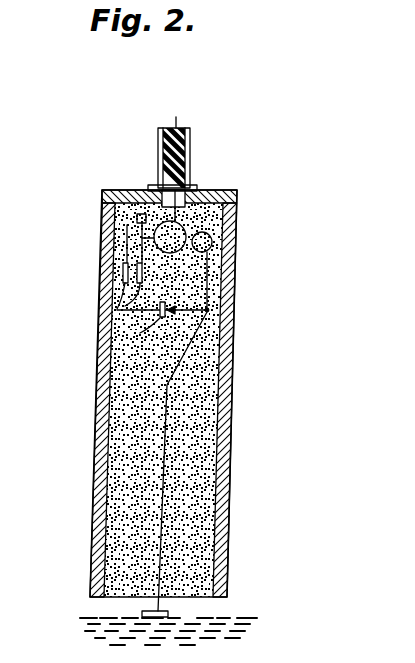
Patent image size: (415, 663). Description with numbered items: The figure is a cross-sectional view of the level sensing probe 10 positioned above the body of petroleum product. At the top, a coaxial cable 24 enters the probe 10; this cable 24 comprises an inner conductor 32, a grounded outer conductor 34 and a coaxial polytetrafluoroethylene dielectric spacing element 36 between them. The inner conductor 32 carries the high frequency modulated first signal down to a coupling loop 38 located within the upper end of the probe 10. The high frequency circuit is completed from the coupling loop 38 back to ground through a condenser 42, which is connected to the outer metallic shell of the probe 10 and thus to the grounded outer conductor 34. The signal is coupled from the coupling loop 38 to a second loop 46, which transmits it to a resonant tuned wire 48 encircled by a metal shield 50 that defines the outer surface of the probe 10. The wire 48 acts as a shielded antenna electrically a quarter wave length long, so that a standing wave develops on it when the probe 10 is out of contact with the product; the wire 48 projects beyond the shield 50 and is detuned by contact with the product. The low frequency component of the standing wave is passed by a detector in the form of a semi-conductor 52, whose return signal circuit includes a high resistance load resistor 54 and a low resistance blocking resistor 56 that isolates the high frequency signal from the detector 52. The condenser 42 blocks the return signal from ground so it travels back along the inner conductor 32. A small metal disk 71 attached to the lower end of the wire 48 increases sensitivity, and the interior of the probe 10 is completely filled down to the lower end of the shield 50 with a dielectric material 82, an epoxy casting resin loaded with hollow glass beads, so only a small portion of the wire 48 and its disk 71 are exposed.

The probe 10 is at (68, 298).
The coaxial cable 24 is at (148, 143).
The inner conductor 32 is at (176, 121).
The outer conductor 34 is at (190, 152).
The dielectric spacing element 36 is at (185, 135).
The coupling loop 38 is at (164, 252).
The condenser 42 is at (137, 221).
The loop 46 is at (206, 232).
The resonant tuned wire 48 is at (160, 491).
The metal shield 50 is at (228, 536).
The semi-conductor 52 is at (140, 333).
The load resistor 54 is at (123, 276).
The blocking resistor 56 is at (117, 310).
The metal disk 71 is at (168, 615).
The dielectric material 82 is at (142, 546).